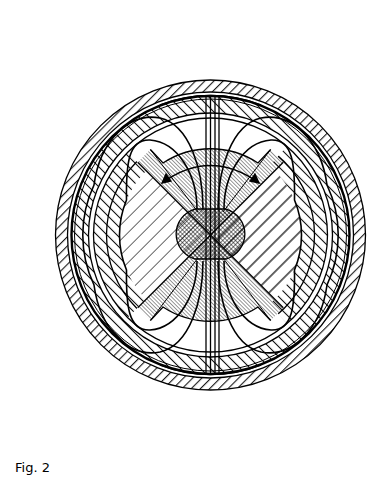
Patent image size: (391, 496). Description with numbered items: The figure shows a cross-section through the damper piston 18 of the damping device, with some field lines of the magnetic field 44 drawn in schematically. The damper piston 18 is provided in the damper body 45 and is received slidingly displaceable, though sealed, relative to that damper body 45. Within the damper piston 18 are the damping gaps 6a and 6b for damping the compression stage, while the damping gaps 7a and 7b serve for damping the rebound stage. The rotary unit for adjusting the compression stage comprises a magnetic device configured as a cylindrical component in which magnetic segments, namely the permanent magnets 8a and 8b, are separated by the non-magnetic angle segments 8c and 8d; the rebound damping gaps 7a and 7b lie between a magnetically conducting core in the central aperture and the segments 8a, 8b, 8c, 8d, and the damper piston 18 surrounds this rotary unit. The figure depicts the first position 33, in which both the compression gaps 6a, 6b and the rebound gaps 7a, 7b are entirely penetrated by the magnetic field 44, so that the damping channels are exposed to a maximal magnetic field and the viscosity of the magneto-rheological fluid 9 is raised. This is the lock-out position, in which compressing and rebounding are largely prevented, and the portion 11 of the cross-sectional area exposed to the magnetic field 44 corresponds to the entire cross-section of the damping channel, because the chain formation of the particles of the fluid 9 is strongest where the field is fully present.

The first position 33 is at (54, 176).
The magnetic field 44 is at (150, 115).
The damper piston 18 is at (93, 157).
The damper body 45 is at (112, 355).
The damping gap 7a is at (323, 127).
The damping gap 7b is at (257, 355).
The portion of the cross-sectional area exposed to a magnetic field 11 is at (215, 78).
The magneto-rheological fluid 9 is at (199, 78).
The permanent magnet 8a is at (247, 78).
The permanent magnet 8b is at (165, 350).
The non-magnetic angle segment 8c is at (90, 280).
The non-magnetic angle segment 8d is at (315, 335).
The damping gap 6a is at (172, 78).
The damping gap 6b is at (180, 387).